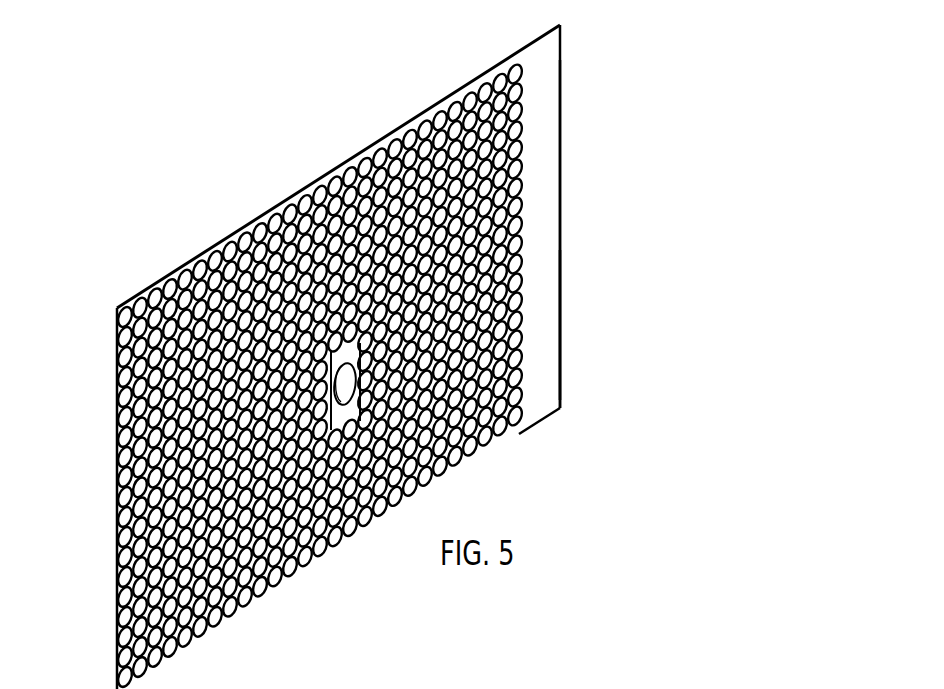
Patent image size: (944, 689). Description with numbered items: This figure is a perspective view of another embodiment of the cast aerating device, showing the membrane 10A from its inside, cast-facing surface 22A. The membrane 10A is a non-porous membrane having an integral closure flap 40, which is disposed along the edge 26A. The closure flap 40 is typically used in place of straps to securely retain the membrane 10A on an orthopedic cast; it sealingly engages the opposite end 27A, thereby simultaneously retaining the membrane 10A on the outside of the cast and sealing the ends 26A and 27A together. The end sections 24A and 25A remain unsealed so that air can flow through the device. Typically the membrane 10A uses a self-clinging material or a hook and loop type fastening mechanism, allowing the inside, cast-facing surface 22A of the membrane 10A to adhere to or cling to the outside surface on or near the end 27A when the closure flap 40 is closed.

The membrane 10A is at (388, 130).
The end section 25A is at (440, 104).
The edge 26A is at (563, 138).
The end section 24A is at (533, 425).
The opposite end 27A is at (113, 452).
The inside, cast-facing surface 22A is at (558, 226).
The closure flap 40 is at (548, 302).